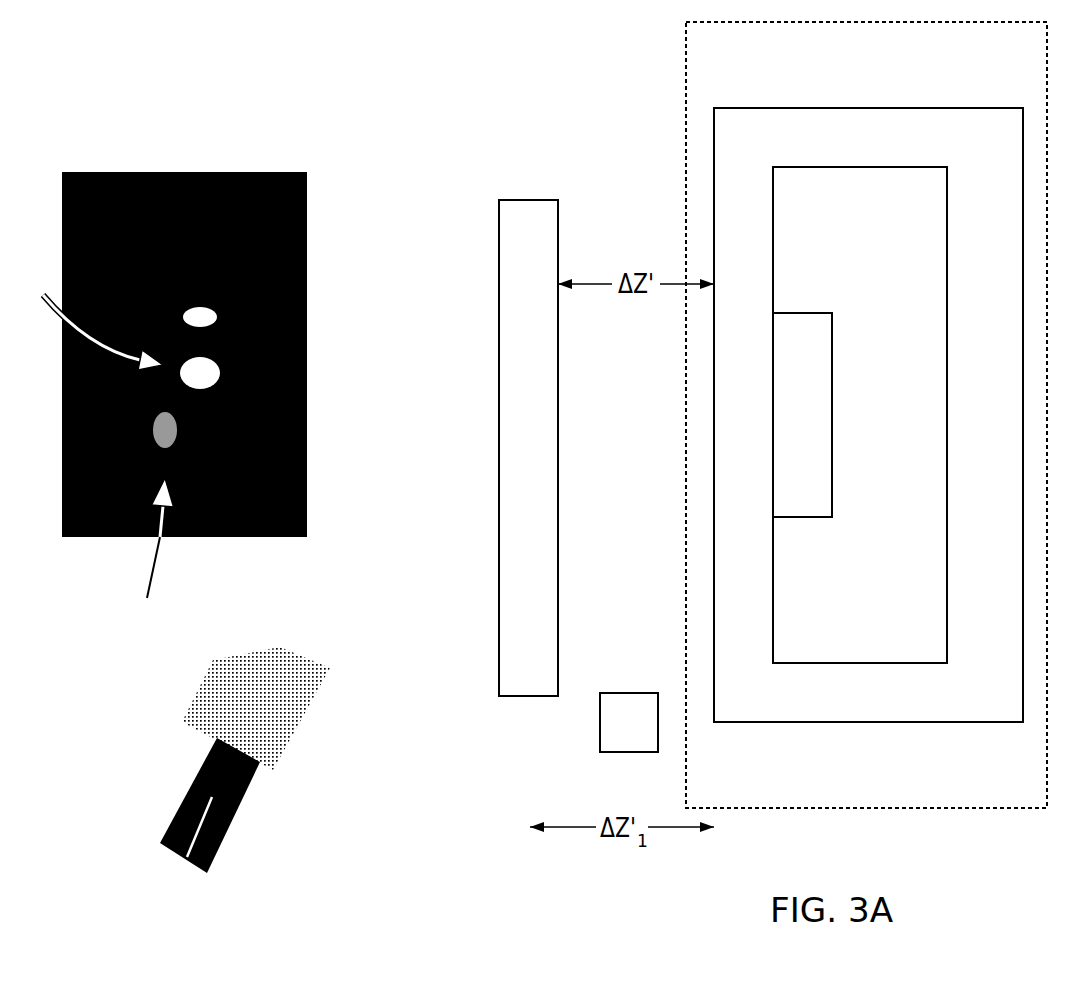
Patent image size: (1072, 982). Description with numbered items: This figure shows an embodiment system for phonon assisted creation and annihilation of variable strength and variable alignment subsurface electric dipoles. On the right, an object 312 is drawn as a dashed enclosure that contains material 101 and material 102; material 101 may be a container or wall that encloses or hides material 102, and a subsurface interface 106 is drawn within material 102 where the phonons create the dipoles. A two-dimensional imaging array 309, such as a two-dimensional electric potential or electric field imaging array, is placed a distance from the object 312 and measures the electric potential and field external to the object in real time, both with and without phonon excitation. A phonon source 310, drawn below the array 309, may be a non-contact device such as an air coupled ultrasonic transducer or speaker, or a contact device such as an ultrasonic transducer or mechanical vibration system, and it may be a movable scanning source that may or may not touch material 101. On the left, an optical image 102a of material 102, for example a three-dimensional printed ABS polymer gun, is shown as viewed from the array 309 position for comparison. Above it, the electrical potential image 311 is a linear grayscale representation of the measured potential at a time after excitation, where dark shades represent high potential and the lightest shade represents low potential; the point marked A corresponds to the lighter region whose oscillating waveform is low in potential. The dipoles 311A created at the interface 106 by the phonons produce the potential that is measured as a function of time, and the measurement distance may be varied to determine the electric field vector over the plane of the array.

The electrical potential image 311 is at (227, 140).
The dipoles 311A is at (147, 598).
The optical image of material 102 102a is at (312, 634).
The two-dimensional imaging array 309 is at (540, 200).
The phonon source 310 is at (600, 752).
The object 312 is at (685, 83).
The material 101 is at (714, 237).
The material 102 is at (803, 313).
The subsurface interface 106 is at (773, 417).